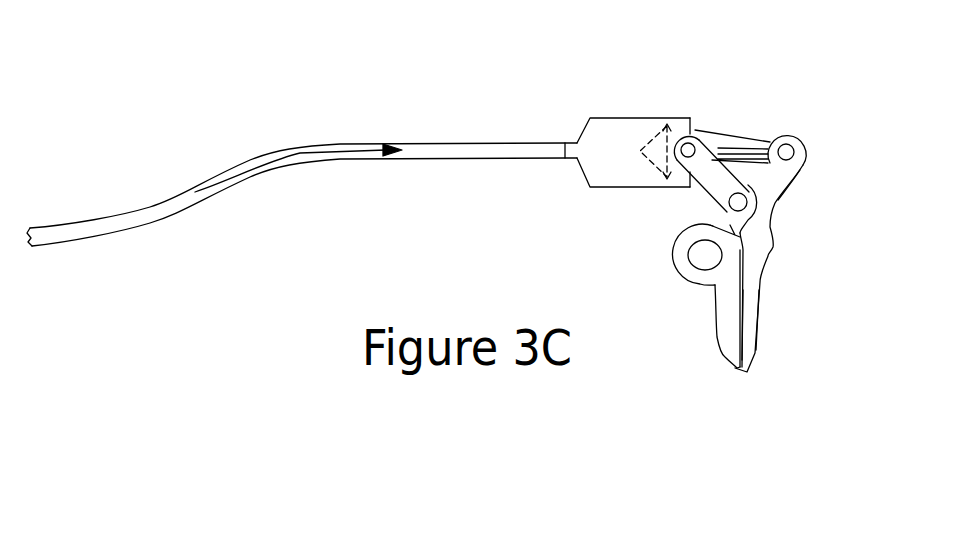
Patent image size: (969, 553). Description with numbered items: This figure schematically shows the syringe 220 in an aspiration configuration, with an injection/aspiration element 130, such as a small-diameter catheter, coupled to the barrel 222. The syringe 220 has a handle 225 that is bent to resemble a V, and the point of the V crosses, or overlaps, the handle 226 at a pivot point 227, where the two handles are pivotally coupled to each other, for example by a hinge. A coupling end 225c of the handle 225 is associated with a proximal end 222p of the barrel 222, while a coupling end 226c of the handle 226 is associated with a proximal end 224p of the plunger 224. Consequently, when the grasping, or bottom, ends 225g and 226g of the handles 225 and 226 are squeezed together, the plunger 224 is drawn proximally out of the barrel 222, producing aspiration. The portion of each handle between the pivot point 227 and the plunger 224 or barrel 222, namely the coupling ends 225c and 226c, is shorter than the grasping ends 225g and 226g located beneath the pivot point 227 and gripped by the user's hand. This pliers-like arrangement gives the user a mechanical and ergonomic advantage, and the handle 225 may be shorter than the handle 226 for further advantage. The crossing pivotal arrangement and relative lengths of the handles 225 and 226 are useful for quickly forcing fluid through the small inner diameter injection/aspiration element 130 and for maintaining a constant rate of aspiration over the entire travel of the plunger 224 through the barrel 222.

The injection/aspiration element 130 is at (443, 144).
The syringe 220 is at (644, 74).
The barrel 222 is at (605, 117).
The proximal end of barrel 222p is at (692, 120).
The plunger 224 is at (768, 126).
The proximal end of plunger 224p is at (778, 135).
The handle 225 is at (725, 287).
The coupling end of handle 225c is at (714, 137).
The grasping end of handle 225g is at (728, 350).
The handle 226 is at (765, 240).
The coupling end of handle 226c is at (790, 173).
The grasping end of handle 226g is at (755, 313).
The pivot point 227 is at (729, 203).